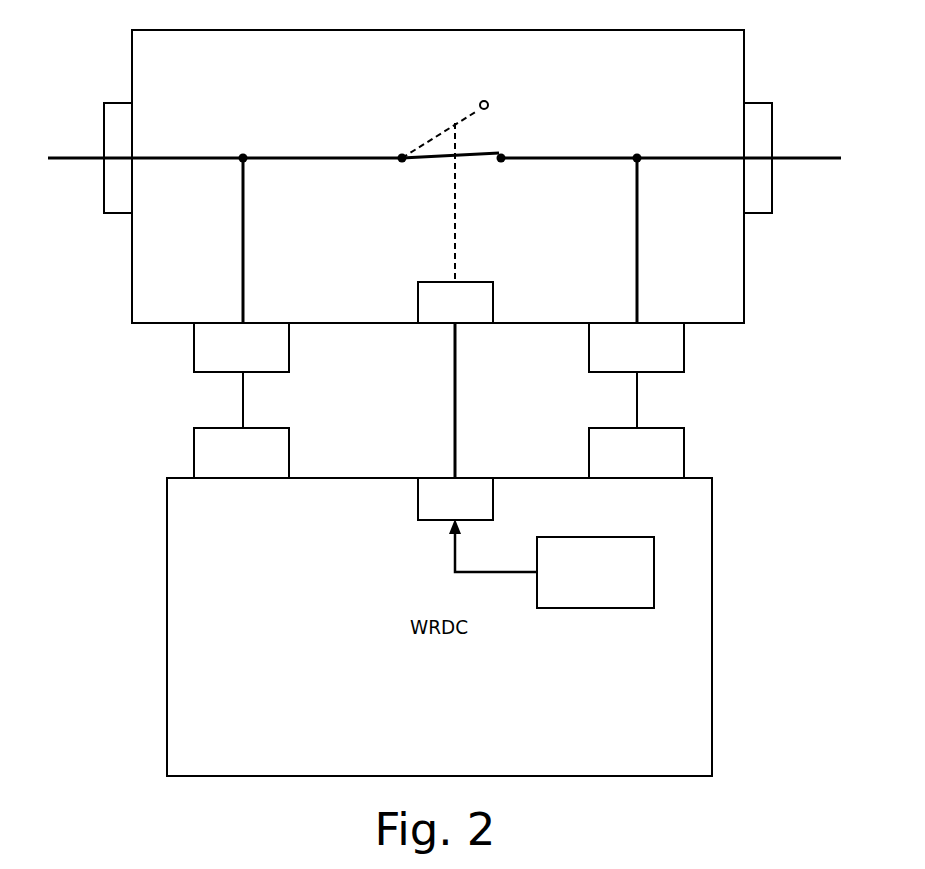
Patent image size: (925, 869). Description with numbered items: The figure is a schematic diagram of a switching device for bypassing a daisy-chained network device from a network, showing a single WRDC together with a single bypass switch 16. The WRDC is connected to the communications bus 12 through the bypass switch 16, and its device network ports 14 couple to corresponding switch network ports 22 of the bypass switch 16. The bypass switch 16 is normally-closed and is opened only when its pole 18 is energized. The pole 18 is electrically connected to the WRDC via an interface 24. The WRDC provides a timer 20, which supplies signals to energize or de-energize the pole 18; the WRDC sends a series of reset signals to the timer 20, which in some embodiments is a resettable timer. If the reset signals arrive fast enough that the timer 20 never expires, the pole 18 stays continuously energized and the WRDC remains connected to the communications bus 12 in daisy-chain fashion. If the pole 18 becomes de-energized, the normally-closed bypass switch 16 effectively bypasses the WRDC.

The communications bus 12 is at (74, 112).
The device network ports 14 is at (439, 453).
The bypass switch 16 is at (438, 176).
The pole 18 is at (455, 302).
The timer 20 is at (595, 572).
The switch network ports 22 is at (439, 347).
The interface 24 is at (433, 478).